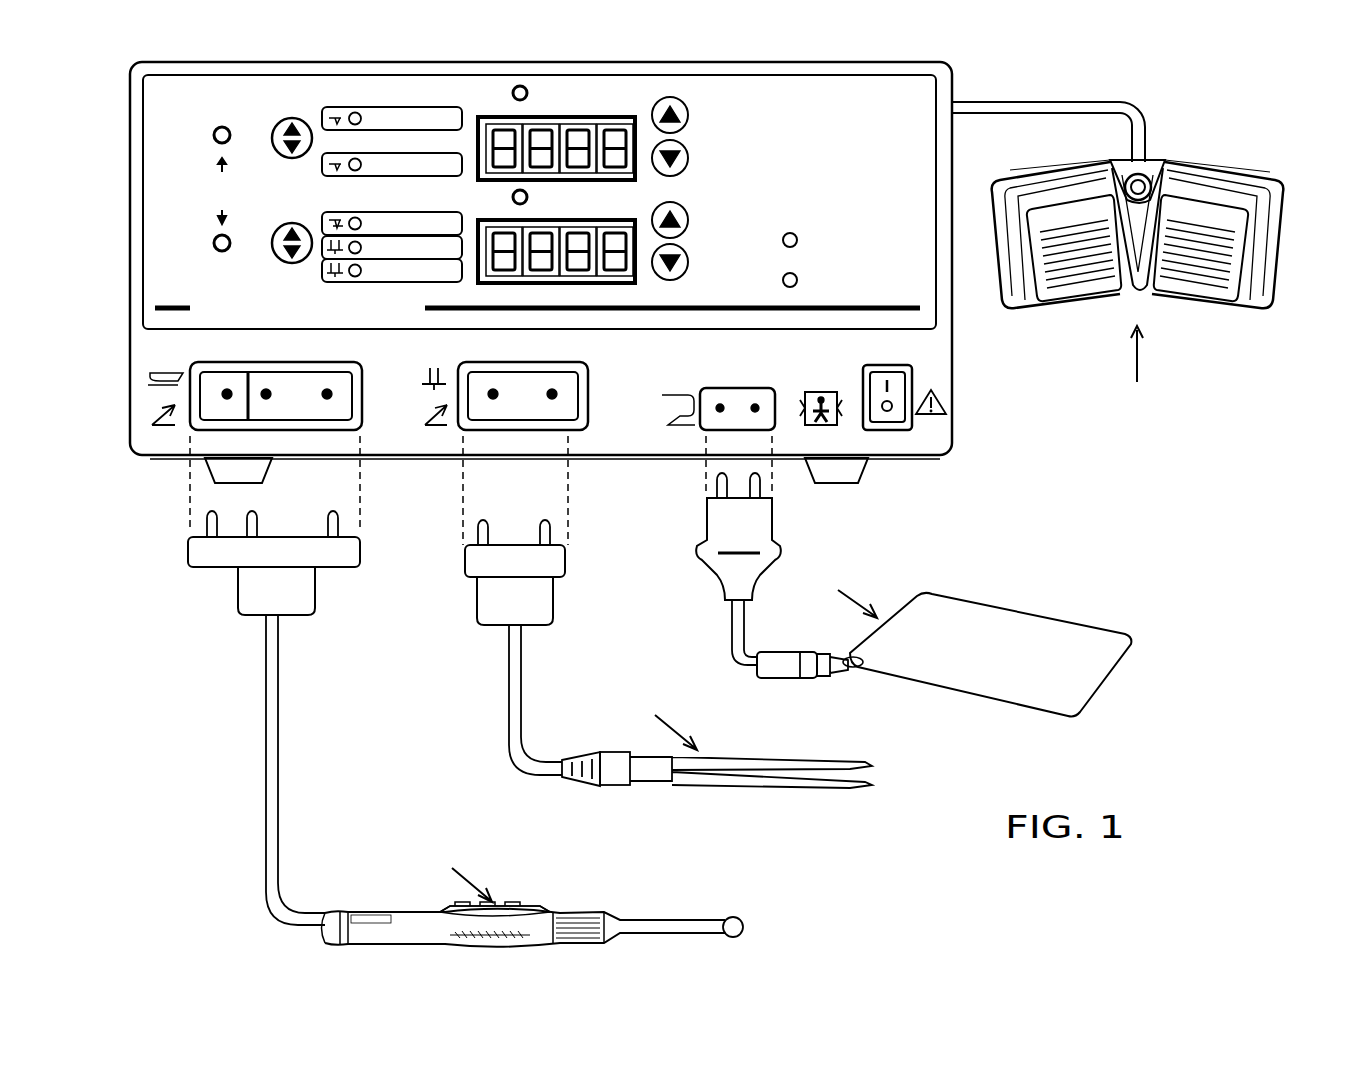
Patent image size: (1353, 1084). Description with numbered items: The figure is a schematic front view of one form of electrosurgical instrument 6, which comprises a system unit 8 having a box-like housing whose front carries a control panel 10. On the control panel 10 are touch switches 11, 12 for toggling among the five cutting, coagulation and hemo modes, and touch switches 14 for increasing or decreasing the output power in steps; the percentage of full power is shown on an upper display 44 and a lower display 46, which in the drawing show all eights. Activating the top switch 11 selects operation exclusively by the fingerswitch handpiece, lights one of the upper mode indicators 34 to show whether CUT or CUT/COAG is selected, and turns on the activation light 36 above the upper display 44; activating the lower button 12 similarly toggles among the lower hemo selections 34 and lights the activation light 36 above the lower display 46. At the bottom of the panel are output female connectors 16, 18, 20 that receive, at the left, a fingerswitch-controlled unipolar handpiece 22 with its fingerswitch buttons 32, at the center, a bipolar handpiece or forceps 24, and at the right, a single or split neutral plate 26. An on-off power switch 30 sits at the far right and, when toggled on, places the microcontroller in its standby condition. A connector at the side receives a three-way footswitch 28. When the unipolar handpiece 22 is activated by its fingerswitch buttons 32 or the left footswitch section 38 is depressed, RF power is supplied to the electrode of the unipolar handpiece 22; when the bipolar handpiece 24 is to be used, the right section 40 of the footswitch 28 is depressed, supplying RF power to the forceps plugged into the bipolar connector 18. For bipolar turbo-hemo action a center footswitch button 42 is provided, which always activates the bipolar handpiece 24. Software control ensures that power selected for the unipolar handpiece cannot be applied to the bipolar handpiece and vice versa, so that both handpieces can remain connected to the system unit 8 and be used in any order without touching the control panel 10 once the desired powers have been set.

The control panel 10 is at (212, 108).
The touch switch 11 is at (296, 117).
The touch switch 12 is at (283, 257).
The mode indicator 34 is at (324, 262).
The activation light 36 is at (513, 92).
The upper display 44 is at (597, 117).
The lower display 46 is at (612, 283).
The touch switches 14 is at (690, 125).
The output female connector 16 is at (360, 426).
The output female connector 18 is at (590, 430).
The output female connector 20 is at (704, 432).
The on-off power switch 30 is at (912, 428).
The system unit 8 is at (958, 93).
The electrosurgical instrument 6 is at (1171, 125).
The left footswitch section 38 is at (1038, 304).
The right footswitch section 40 is at (1213, 298).
The center footswitch button 42 is at (1150, 178).
The 3-way footswitch 28 is at (1069, 331).
The fingerswitch-controlled unipolar handpiece 22 is at (560, 907).
The fingerswitch buttons 32 is at (510, 902).
The bipolar handpiece 24 is at (714, 806).
The neutral plate 26 is at (1000, 580).